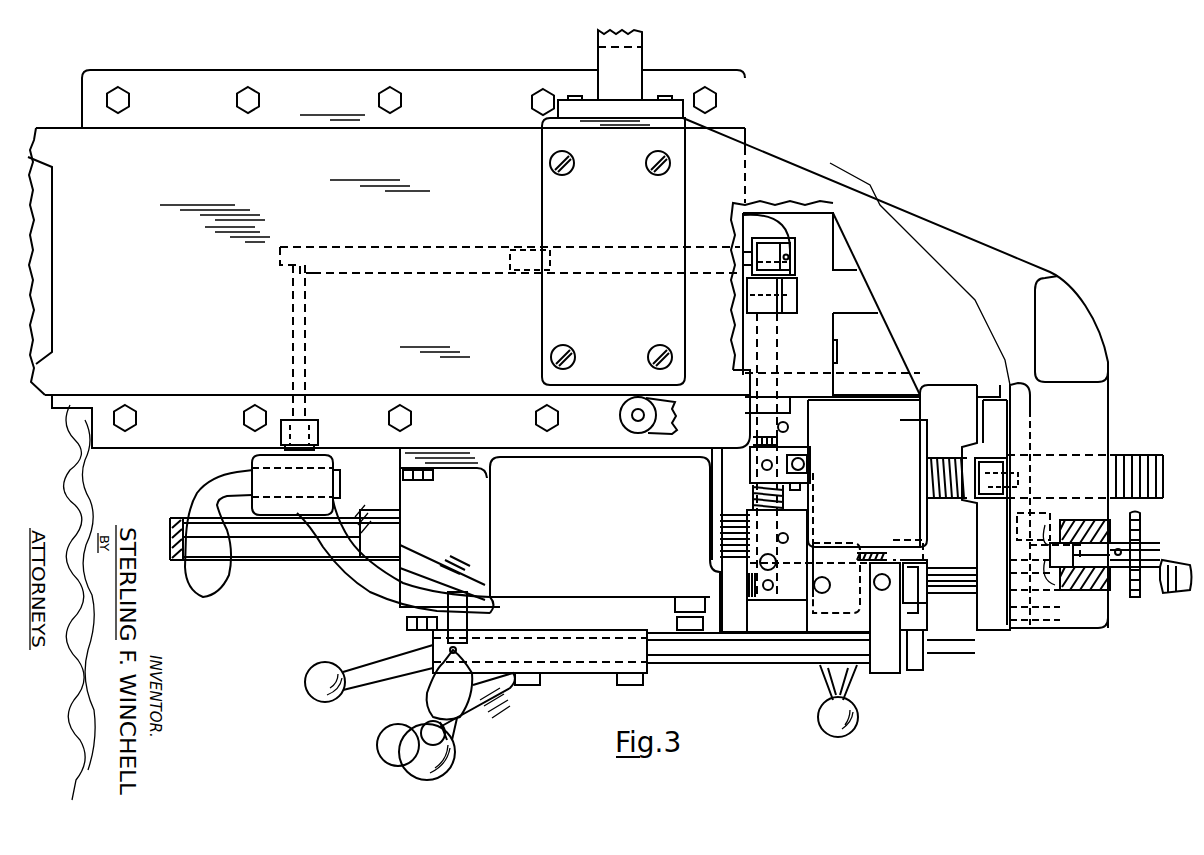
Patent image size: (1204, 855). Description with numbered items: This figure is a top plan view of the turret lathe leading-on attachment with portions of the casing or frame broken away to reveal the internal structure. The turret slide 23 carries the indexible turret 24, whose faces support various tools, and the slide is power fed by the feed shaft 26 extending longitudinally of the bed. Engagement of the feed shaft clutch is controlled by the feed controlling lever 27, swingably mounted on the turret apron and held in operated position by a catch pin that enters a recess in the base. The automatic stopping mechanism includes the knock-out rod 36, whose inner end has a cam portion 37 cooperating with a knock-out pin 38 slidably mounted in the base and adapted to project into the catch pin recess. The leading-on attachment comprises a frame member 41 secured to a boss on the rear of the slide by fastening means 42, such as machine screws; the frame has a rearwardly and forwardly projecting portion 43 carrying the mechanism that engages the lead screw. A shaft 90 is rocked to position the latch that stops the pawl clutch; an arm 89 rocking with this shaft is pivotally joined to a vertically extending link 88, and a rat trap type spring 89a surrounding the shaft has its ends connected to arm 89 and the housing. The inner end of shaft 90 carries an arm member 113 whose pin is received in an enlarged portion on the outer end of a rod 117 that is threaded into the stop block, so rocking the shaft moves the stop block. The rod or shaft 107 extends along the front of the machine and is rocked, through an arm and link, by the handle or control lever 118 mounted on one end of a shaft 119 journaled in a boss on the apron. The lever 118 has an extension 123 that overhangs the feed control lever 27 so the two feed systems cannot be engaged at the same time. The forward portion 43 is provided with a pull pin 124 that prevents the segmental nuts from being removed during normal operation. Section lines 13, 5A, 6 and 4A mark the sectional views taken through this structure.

The turret slide 23 is at (292, 182).
The indexible turret 24 is at (45, 240).
The knock-out rod 36 is at (390, 248).
The cam portion 37 is at (306, 278).
The knock-out pin 38 is at (306, 342).
The fastening means 42 is at (570, 160).
The rod 117 is at (643, 258).
The section line 13 is at (462, 258).
The shaft 90 is at (785, 372).
The arm member 113 is at (782, 298).
The section line 5A is at (808, 350).
The section line 6 is at (933, 373).
The section line 4A is at (1027, 397).
The frame member 41 is at (990, 272).
The feed controlling lever 27 is at (372, 588).
The feed shaft 26 is at (280, 550).
The arm 89 is at (797, 453).
The link 88 is at (805, 468).
The rat trap type spring 89a is at (750, 494).
The rearwardly and forwardly projecting portion 43 is at (1092, 612).
The pull pin 124 is at (1058, 556).
The rod or shaft 107 is at (1172, 572).
The shaft 119 is at (738, 650).
The extension 123 is at (478, 618).
The handle or control lever 118 is at (447, 745).